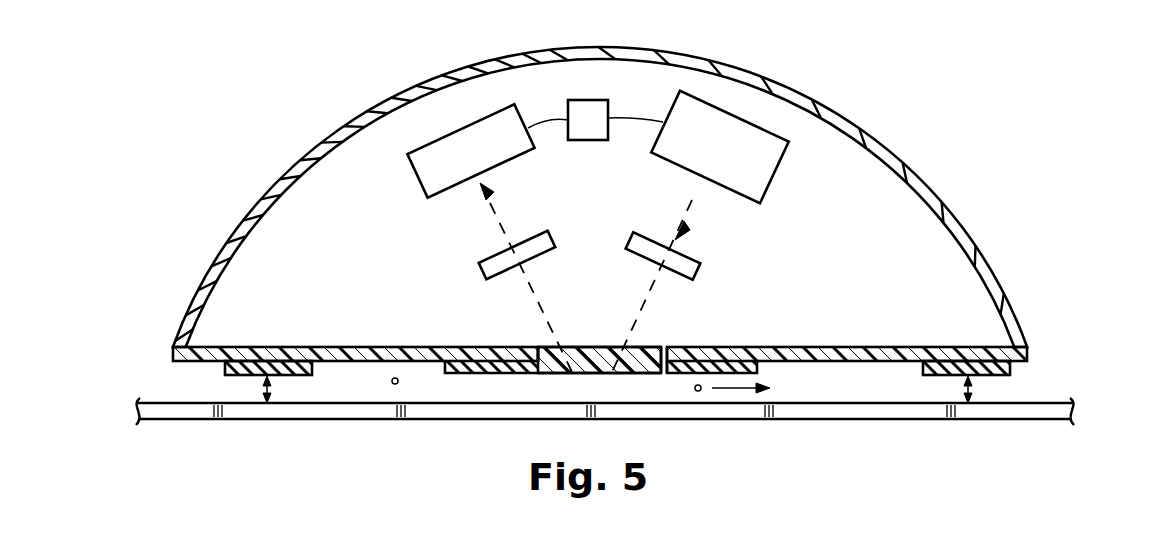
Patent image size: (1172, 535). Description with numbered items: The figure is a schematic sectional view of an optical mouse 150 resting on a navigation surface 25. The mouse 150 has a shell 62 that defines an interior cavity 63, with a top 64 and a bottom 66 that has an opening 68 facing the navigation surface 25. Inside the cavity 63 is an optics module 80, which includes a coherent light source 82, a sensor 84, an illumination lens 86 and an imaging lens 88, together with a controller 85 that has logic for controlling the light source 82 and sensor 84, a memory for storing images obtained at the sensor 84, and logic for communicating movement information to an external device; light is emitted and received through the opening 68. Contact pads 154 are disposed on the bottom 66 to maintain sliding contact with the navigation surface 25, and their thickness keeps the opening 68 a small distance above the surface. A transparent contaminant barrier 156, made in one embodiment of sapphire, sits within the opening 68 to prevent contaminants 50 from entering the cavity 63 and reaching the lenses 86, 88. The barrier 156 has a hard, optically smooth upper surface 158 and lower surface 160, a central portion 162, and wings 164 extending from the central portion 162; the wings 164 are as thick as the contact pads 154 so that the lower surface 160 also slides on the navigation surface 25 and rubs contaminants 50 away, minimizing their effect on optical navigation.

The navigation surface 25 is at (792, 402).
The contaminants 50 is at (394, 385).
The shell 62 is at (990, 262).
The cavity 63 is at (930, 291).
The top 64 is at (612, 52).
The bottom 66 is at (808, 362).
The opening 68 is at (539, 347).
The optics module 80 is at (488, 105).
The coherent light source 82 is at (771, 180).
The sensor 84 is at (418, 176).
The controller 85 is at (590, 141).
The illumination lens 86 is at (660, 243).
The imaging lens 88 is at (552, 246).
The optical mouse 150 is at (944, 200).
The contact pads 154 is at (222, 363).
The transparent contaminant barrier 156 is at (648, 345).
The upper surface 158 is at (595, 347).
The lower surface 160 is at (660, 374).
The central portion 162 is at (560, 347).
The wings 164 is at (494, 375).